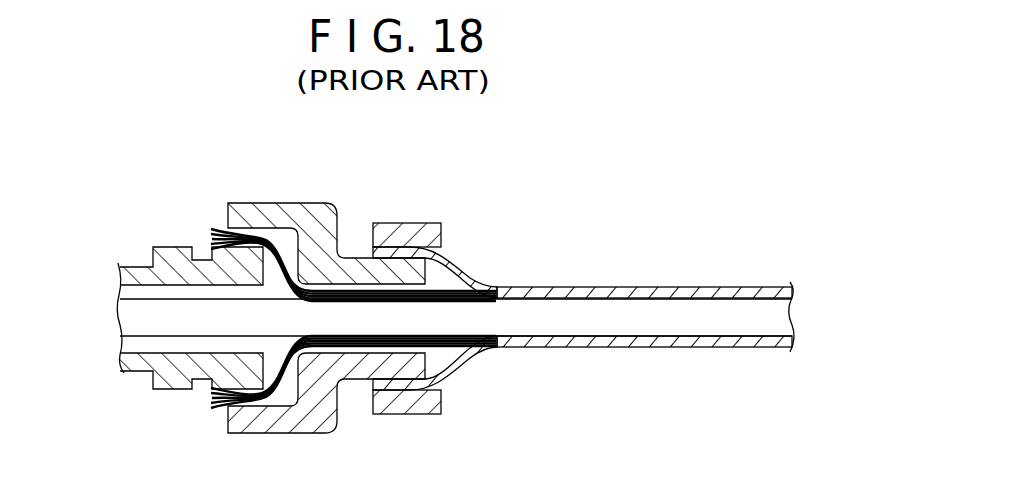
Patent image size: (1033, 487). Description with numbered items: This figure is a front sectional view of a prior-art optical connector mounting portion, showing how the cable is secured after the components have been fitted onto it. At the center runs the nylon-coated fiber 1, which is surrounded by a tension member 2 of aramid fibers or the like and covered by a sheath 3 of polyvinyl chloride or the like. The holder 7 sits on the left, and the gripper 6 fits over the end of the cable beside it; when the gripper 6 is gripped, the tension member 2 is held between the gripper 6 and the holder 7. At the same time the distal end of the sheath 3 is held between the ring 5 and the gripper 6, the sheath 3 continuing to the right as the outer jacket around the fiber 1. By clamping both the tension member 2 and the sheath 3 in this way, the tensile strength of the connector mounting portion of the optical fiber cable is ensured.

The nylon-coated fiber 1 is at (600, 314).
The tension member 2 is at (210, 228).
The sheath 3 is at (475, 282).
The ring 5 is at (398, 228).
The gripper 6 is at (287, 212).
The holder 7 is at (160, 240).